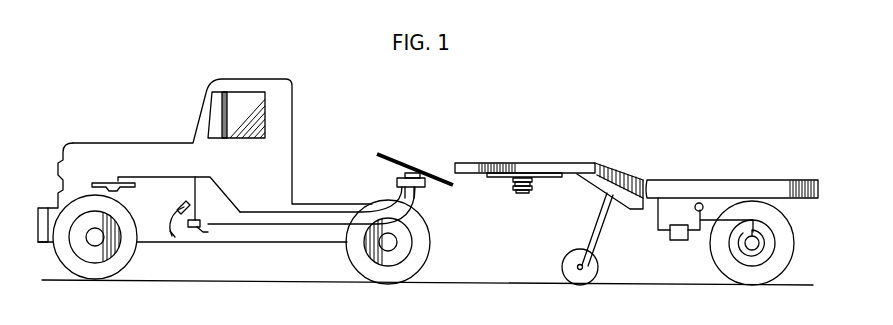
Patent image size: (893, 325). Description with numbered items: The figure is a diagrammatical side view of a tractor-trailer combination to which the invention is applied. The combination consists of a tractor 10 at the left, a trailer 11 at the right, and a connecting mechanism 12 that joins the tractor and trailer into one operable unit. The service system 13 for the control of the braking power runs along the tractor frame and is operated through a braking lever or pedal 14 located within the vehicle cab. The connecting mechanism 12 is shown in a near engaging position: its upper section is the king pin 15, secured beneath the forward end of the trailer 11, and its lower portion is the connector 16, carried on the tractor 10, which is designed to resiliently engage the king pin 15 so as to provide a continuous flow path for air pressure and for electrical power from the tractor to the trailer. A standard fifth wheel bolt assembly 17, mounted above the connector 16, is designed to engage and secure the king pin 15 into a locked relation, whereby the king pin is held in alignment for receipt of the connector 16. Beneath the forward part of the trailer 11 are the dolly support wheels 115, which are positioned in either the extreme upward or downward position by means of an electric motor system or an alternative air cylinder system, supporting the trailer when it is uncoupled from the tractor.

The tractor 10 is at (283, 78).
The trailer 11 is at (710, 179).
The connecting mechanism 12 is at (432, 159).
The service system 13 is at (313, 226).
The braking lever or pedal 14 is at (171, 239).
The king pin 15 is at (520, 194).
The connector 16 is at (426, 189).
The fifth wheel bolt assembly 17 is at (385, 152).
The dolly support wheels 115 is at (589, 279).